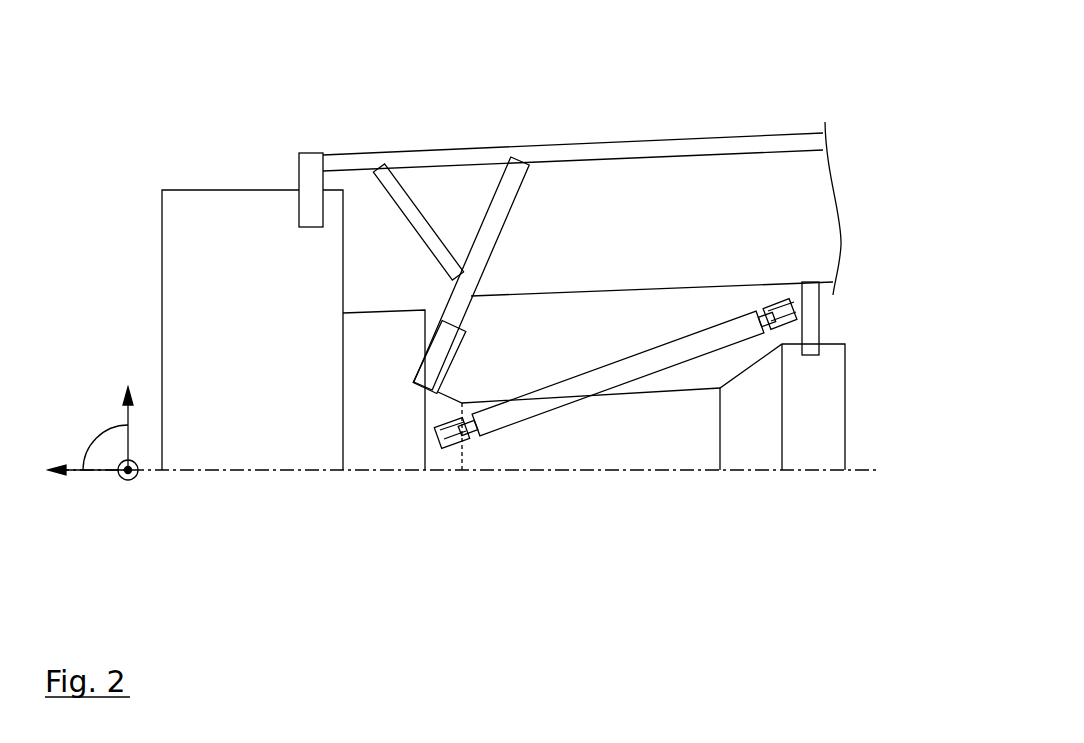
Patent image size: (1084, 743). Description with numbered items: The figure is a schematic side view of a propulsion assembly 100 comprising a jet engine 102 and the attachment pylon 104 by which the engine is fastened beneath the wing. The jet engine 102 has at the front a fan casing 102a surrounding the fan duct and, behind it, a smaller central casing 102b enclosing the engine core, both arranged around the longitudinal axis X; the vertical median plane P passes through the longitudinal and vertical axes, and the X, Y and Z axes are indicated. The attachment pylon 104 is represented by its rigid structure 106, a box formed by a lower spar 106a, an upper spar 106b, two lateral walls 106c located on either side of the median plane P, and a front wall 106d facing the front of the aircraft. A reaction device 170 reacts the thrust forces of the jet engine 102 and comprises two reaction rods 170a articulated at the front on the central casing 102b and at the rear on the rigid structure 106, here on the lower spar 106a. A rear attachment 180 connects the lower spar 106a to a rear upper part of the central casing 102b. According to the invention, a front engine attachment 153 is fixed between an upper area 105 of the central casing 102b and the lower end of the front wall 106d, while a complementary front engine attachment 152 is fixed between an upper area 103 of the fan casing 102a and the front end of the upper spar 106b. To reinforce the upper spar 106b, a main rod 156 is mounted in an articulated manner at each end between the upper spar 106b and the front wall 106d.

The propulsion assembly 100 is at (224, 130).
The jet engine 102 is at (503, 393).
The fan casing 102a is at (284, 402).
The central casing 102b is at (693, 455).
The upper area of the fan casing 103 is at (296, 208).
The attachment pylon 104 is at (703, 96).
The upper area of the central casing 105 is at (420, 387).
The rigid structure 106 is at (625, 284).
The lower spar 106a is at (740, 282).
The upper spar 106b is at (398, 160).
The lateral wall 106c is at (698, 250).
The front wall 106d is at (497, 217).
The complementary front engine attachment 152 is at (313, 185).
The front engine attachment 153 is at (445, 352).
The main rod 156 is at (420, 218).
The reaction device 170 is at (600, 447).
The reaction rod 170a is at (553, 398).
The rear attachment 180 is at (808, 330).
The vertical median plane P is at (93, 444).